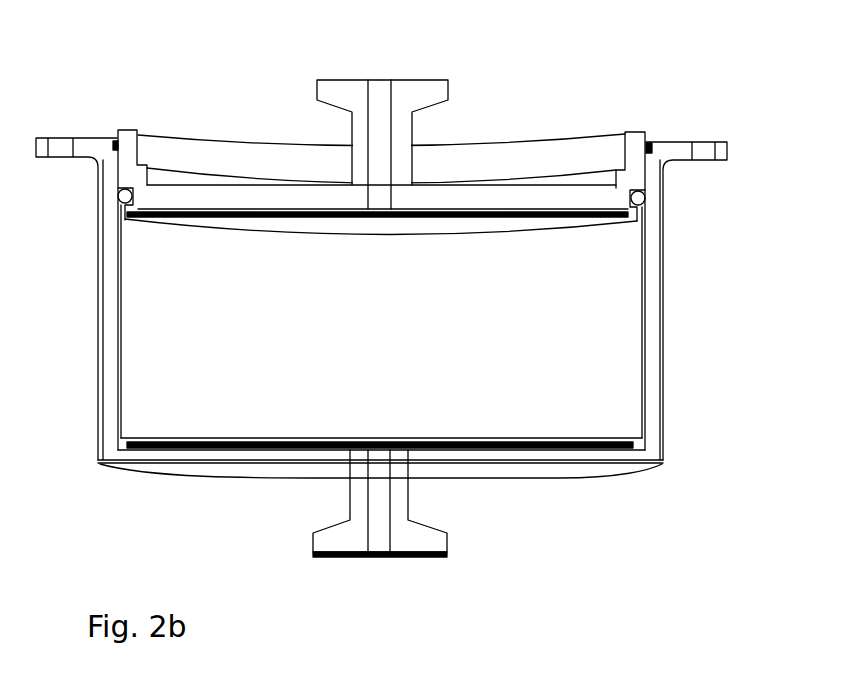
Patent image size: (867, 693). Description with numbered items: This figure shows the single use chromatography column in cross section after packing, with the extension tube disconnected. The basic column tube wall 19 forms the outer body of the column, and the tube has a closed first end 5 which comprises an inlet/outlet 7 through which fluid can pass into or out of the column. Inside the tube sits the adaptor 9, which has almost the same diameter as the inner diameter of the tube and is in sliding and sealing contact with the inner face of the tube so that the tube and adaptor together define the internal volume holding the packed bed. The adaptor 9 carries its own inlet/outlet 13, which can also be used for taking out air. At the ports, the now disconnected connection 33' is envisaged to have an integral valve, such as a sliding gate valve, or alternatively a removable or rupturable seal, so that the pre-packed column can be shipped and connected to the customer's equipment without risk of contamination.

The closed first end 5 is at (507, 457).
The inlet/outlet 7 is at (380, 458).
The adaptor 9 is at (510, 188).
The inlet/outlet 13 is at (378, 193).
The basic column tube wall 19 is at (663, 337).
The disconnected connection 33' is at (405, 320).